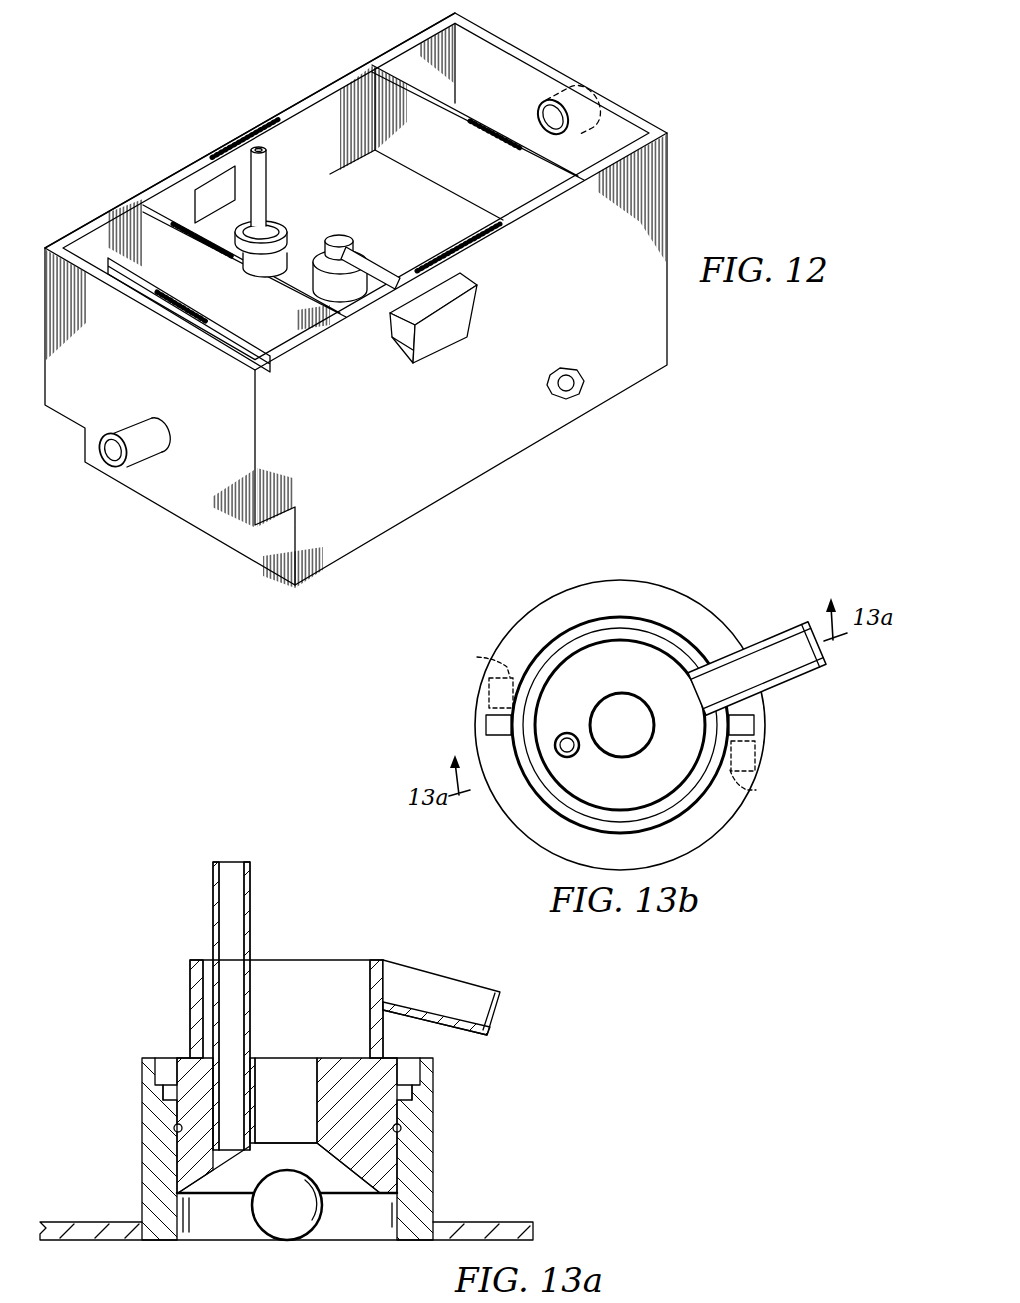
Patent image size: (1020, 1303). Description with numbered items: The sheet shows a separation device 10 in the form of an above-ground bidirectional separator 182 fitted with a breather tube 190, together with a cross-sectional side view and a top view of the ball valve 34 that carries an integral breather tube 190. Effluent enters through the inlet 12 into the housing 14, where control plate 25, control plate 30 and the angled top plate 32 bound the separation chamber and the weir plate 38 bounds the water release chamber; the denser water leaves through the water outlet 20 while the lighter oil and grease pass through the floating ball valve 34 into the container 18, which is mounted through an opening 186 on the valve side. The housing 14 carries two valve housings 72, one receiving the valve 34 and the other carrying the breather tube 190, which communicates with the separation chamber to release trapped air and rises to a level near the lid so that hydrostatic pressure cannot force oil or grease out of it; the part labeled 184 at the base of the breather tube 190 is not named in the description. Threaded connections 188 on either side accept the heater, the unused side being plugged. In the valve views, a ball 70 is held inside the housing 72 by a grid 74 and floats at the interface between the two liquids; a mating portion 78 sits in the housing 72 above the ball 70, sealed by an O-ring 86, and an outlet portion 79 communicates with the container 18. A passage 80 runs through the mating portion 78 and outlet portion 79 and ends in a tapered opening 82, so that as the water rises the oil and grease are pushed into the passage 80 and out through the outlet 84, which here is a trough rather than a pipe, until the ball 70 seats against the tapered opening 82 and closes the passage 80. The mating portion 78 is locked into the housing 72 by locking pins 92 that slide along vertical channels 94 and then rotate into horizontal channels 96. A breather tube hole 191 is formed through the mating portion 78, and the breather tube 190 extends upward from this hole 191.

In FIG. 12, the separation device 10 is at (118, 118).
In FIG. 12, the above-ground bidirectional separator 182 is at (97, 197).
In FIG. 12, the housing 14 is at (307, 100).
In FIG. 12, the opening 186 is at (213, 187).
In FIG. 12, the breather tube 190 is at (266, 160).
In FIG. 13b, the breather tube 190 is at (577, 757).
In FIG. 13a, the breather tube 190 is at (213, 883).
In FIG. 12, the flange 184 is at (285, 220).
In FIG. 12, the control plate 25 is at (417, 158).
In FIG. 12, the top plate 32 is at (458, 207).
In FIG. 12, the floating ball valve 34 is at (347, 237).
In FIG. 12, the outlet 84 is at (380, 255).
In FIG. 13b, the outlet 84 is at (788, 622).
In FIG. 13a, the outlet 84 is at (440, 973).
In FIG. 12, the inlet 12 is at (546, 97).
In FIG. 12, the valve housing 72 is at (262, 277).
In FIG. 13b, the valve housing 72 is at (517, 620).
In FIG. 13a, the valve housing 72 is at (437, 1192).
In FIG. 12, the container 18 is at (448, 337).
In FIG. 12, the threaded connection 188 is at (578, 372).
In FIG. 12, the weir plate 38 is at (148, 295).
In FIG. 12, the water outlet 20 is at (145, 423).
In FIG. 12, the control plate 30 is at (278, 333).
In FIG. 13b, the outlet portion 79 is at (618, 617).
In FIG. 13a, the outlet portion 79 is at (190, 997).
In FIG. 13b, the locking pin 92 is at (492, 658).
In FIG. 13a, the locking pin 92 is at (167, 1110).
In FIG. 13b, the horizontal channel 96 is at (483, 688).
In FIG. 13b, the vertical channel 94 is at (487, 725).
In FIG. 13a, the vertical channel 94 is at (162, 1070).
In FIG. 13b, the breather tube hole 191 is at (567, 733).
In FIG. 13a, the breather tube hole 191 is at (230, 1153).
In FIG. 13b, the mating portion 78 is at (633, 682).
In FIG. 13a, the mating portion 78 is at (183, 1058).
In FIG. 13b, the passage 80 is at (610, 737).
In FIG. 13a, the passage 80 is at (290, 1078).
In FIG. 13a, the ball 70 is at (287, 1213).
In FIG. 13a, the grid 74 is at (328, 1243).
In FIG. 13a, the tapered opening 82 is at (335, 1177).
In FIG. 13a, the O-ring 86 is at (173, 1128).